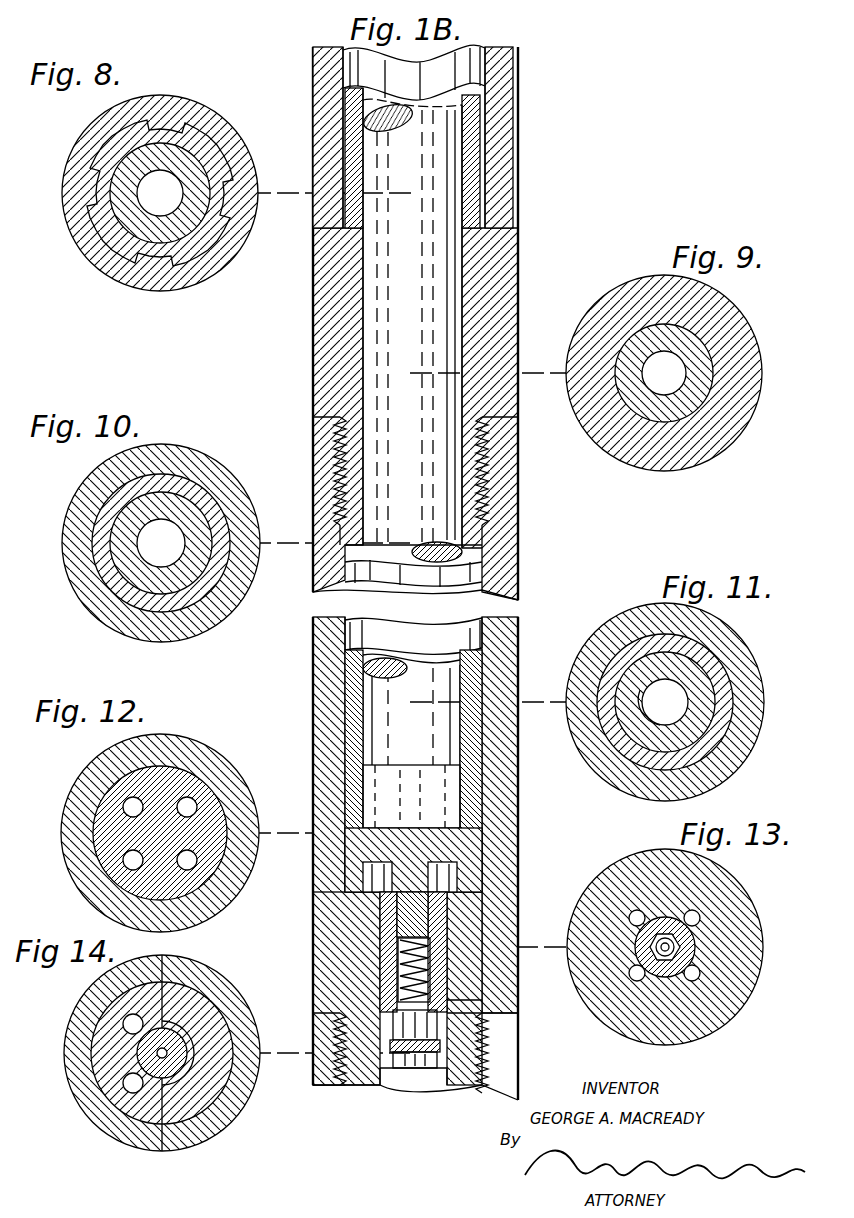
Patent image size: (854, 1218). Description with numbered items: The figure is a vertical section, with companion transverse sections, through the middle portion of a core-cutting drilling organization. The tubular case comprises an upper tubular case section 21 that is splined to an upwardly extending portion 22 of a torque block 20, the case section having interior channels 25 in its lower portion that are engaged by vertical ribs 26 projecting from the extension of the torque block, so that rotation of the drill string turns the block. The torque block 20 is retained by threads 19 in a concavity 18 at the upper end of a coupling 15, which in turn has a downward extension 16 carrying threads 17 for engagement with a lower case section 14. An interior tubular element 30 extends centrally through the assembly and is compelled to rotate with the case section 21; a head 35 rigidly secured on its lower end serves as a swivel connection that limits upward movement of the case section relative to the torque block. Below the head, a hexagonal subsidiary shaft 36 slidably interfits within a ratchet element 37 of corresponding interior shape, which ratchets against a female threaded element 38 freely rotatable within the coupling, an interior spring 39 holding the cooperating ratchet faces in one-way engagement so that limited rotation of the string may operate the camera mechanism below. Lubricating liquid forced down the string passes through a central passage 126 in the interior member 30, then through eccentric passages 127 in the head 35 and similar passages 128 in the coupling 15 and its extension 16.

In FIG. 1B, the lower case section 14 is at (500, 1052).
In FIG. 1B, the coupling 15 is at (497, 462).
In FIG. 10, the coupling 15 is at (240, 512).
In FIG. 11, the coupling 15 is at (738, 643).
In FIG. 12, the coupling 15 is at (88, 777).
In FIG. 13, the coupling 15 is at (738, 910).
In FIG. 1B, the downward extension 16 is at (462, 1045).
In FIG. 14, the downward extension 16 is at (185, 1100).
In FIG. 1B, the threads 17 is at (470, 1072).
In FIG. 1B, the concavity 18 is at (470, 665).
In FIG. 11, the concavity 18 is at (718, 677).
In FIG. 1B, the threads of the concavity 19 is at (485, 498).
In FIG. 1B, the torque block 20 is at (527, 288).
In FIG. 9, the torque block 20 is at (753, 309).
In FIG. 10, the torque block 20 is at (215, 560).
In FIG. 1B, the upper tubular case section 21 is at (505, 120).
In FIG. 1B, the upwardly extending portion of the torque block 22 is at (470, 175).
In FIG. 8, the interior channels 25 is at (233, 213).
In FIG. 1B, the vertical ribs 26 is at (485, 198).
In FIG. 1B, the interior tubular element 30 is at (395, 265).
In FIG. 9, the interior tubular element 30 is at (700, 370).
In FIG. 10, the interior tubular element 30 is at (120, 573).
In FIG. 11, the interior tubular element 30 is at (692, 722).
In FIG. 1B, the head 35 is at (352, 690).
In FIG. 11, the head 35 is at (715, 710).
In FIG. 12, the head 35 is at (205, 822).
In FIG. 1B, the subsidiary shaft 36 is at (405, 905).
In FIG. 1B, the ratchet element 37 is at (435, 920).
In FIG. 13, the ratchet element 37 is at (685, 945).
In FIG. 1B, the female threaded element 38 is at (388, 1078).
In FIG. 14, the female threaded element 38 is at (140, 1053).
In FIG. 1B, the interior spring 39 is at (428, 970).
In FIG. 1B, the central passage 126 is at (390, 120).
In FIG. 9, the central passage 126 is at (675, 383).
In FIG. 10, the central passage 126 is at (165, 527).
In FIG. 11, the central passage 126 is at (648, 700).
In FIG. 1B, the eccentric passages 127 is at (443, 845).
In FIG. 12, the eccentric passages 127 is at (190, 805).
In FIG. 13, the passages 128 is at (700, 972).
In FIG. 14, the passages 128 is at (128, 1023).